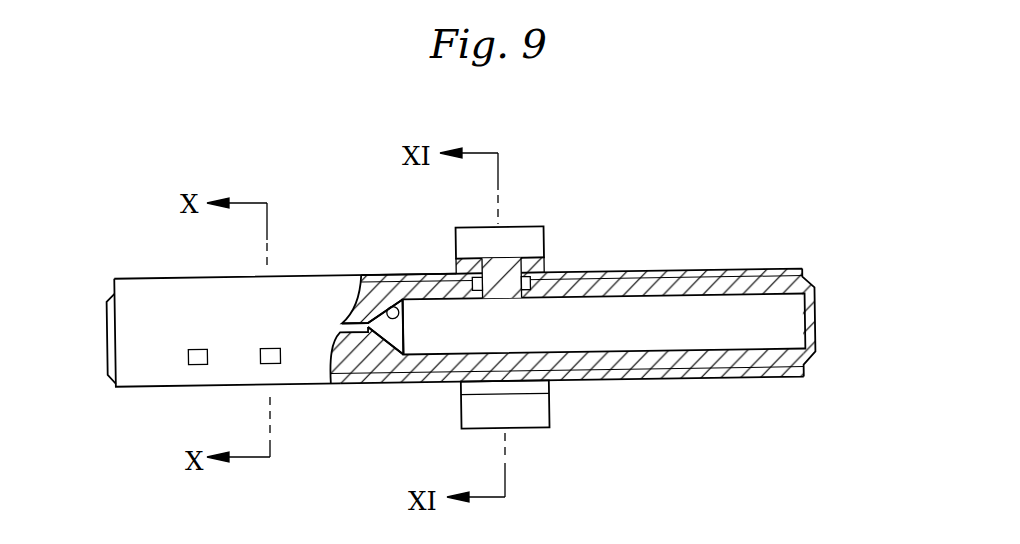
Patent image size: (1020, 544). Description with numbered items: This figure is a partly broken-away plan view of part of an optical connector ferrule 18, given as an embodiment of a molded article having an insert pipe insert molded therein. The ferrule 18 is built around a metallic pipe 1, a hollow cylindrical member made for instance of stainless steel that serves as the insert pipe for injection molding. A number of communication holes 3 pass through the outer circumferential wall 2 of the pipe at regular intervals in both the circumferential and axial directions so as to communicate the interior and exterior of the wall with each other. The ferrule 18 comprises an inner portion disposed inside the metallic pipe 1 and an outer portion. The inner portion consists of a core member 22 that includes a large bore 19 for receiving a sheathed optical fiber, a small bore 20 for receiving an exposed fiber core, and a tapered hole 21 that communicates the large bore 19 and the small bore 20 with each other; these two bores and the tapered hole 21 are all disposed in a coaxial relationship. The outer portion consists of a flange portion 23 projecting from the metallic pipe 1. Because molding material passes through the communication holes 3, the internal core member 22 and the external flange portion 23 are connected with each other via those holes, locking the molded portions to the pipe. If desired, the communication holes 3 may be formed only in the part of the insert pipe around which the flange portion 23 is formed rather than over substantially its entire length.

The metallic pipe 1 is at (166, 277).
The outer circumferential wall 2 is at (612, 380).
The communication holes 3 is at (190, 360).
The ferrule 18 is at (576, 294).
The large bore 19 is at (705, 302).
The small bore 20 is at (369, 330).
The tapered hole 21 is at (400, 305).
The core member 22 is at (740, 362).
The flange portion 23 is at (546, 242).